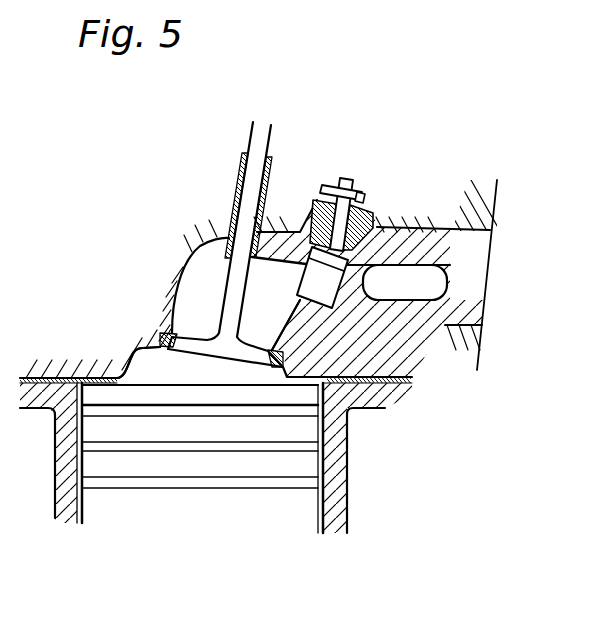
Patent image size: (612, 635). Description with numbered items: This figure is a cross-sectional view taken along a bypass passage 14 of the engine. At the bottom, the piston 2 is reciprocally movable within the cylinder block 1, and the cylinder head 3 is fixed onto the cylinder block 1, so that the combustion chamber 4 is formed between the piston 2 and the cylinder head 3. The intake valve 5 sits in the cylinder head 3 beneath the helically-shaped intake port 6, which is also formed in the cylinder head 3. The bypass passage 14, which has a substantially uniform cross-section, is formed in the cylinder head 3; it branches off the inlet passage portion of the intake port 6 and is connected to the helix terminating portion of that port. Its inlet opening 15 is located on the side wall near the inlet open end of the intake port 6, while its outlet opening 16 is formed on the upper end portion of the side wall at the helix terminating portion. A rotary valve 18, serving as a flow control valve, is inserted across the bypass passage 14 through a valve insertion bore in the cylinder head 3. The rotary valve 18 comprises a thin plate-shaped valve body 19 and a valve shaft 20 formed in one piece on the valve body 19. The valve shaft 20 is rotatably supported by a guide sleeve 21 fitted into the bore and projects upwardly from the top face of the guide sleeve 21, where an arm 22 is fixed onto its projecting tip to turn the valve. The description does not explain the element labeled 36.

The cylinder block 1 is at (62, 462).
The piston 2 is at (128, 503).
The cylinder head 3 is at (115, 358).
The combustion chamber 4 is at (158, 376).
The intake valve 5 is at (230, 295).
The helically-shaped intake port 6 is at (442, 240).
The bypass passage 14 is at (382, 262).
The inlet opening 15 is at (428, 292).
The outlet opening 16 is at (277, 285).
The rotary valve 18 is at (339, 178).
The valve body 19 is at (310, 250).
The valve shaft 20 is at (365, 200).
The guide sleeve 21 is at (316, 207).
The arm 22 is at (330, 183).
The passage 36 is at (355, 358).